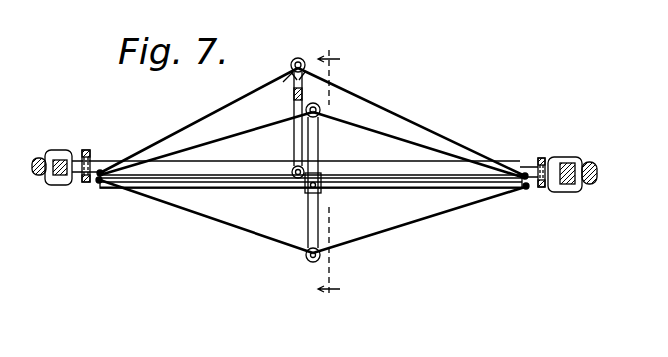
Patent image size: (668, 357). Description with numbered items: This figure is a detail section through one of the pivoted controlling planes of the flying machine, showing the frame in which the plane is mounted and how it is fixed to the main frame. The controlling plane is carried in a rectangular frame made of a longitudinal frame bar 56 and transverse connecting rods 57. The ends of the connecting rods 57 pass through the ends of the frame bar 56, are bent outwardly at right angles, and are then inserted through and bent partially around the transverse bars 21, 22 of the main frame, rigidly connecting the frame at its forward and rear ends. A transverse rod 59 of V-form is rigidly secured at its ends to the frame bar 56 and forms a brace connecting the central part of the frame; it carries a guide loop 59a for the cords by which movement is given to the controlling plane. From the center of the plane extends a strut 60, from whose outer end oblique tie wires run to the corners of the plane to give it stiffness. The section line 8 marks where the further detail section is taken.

The section line 8 is at (329, 163).
The transverse bar 21 is at (37, 155).
The transverse bar 22 is at (597, 163).
The longitudinal frame bar 56 is at (394, 190).
The transverse connecting rod 57 is at (96, 190).
The transverse rod 59 is at (294, 105).
The guide loop 59a is at (298, 58).
The strut 60 is at (319, 158).